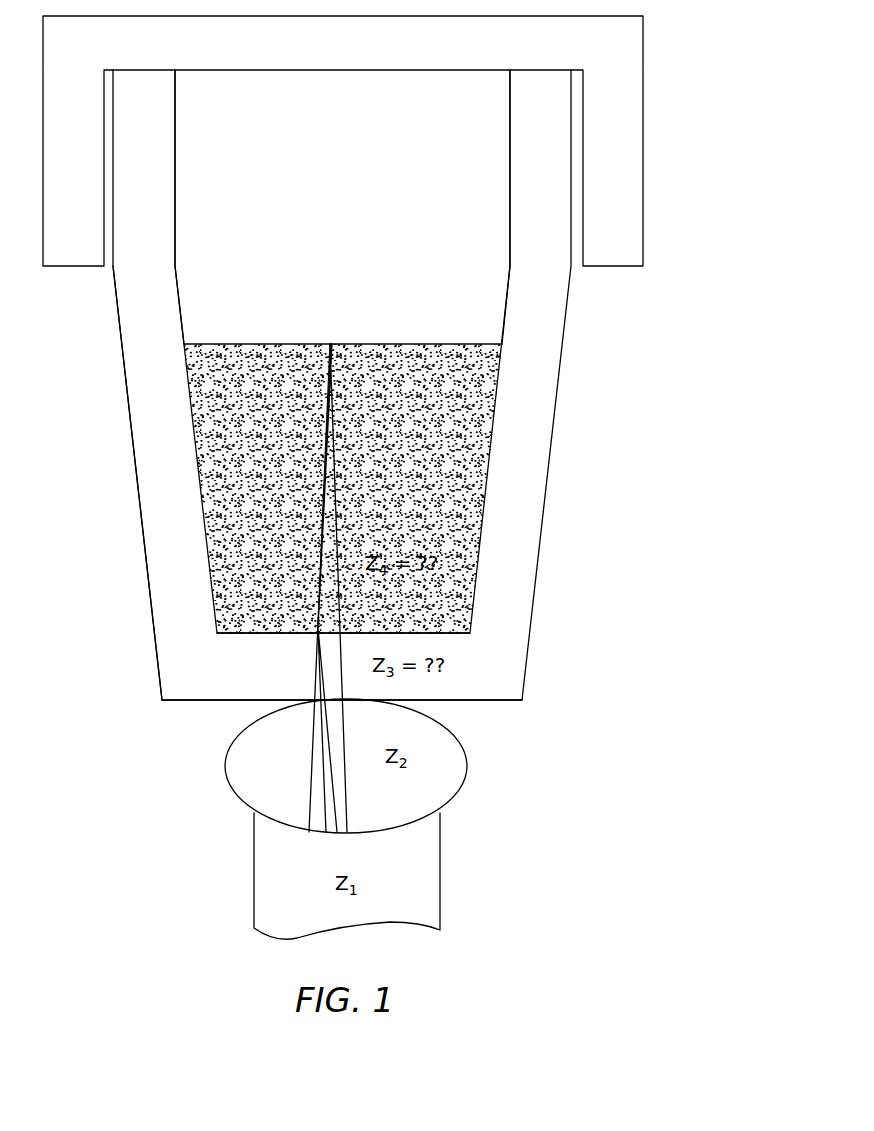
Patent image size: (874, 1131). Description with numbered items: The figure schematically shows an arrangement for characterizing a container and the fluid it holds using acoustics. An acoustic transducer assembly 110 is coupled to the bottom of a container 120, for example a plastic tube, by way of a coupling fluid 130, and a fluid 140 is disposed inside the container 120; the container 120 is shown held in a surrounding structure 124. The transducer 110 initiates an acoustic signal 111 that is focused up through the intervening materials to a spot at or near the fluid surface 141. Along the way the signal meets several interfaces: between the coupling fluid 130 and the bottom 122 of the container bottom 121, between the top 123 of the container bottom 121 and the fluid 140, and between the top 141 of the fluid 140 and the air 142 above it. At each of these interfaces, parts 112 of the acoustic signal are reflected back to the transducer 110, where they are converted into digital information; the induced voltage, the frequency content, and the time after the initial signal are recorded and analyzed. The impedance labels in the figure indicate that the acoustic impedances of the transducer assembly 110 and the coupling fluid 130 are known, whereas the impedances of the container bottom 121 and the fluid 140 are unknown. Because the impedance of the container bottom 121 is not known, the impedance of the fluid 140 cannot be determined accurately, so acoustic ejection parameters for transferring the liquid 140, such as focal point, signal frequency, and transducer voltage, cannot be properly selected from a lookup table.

The acoustic transducer assembly 110 is at (288, 882).
The acoustic signal 111 is at (320, 590).
The reflected parts of the acoustic signal 112 is at (345, 785).
The container 120 is at (508, 566).
The container bottom 121 is at (178, 644).
The bottom of the container bottom 122 is at (205, 700).
The top of the container bottom 123 is at (472, 633).
The holder frame 124 is at (620, 115).
The coupling fluid 130 is at (448, 747).
The fluid 140 is at (447, 472).
The fluid surface 141 is at (375, 343).
The air 142 is at (357, 221).